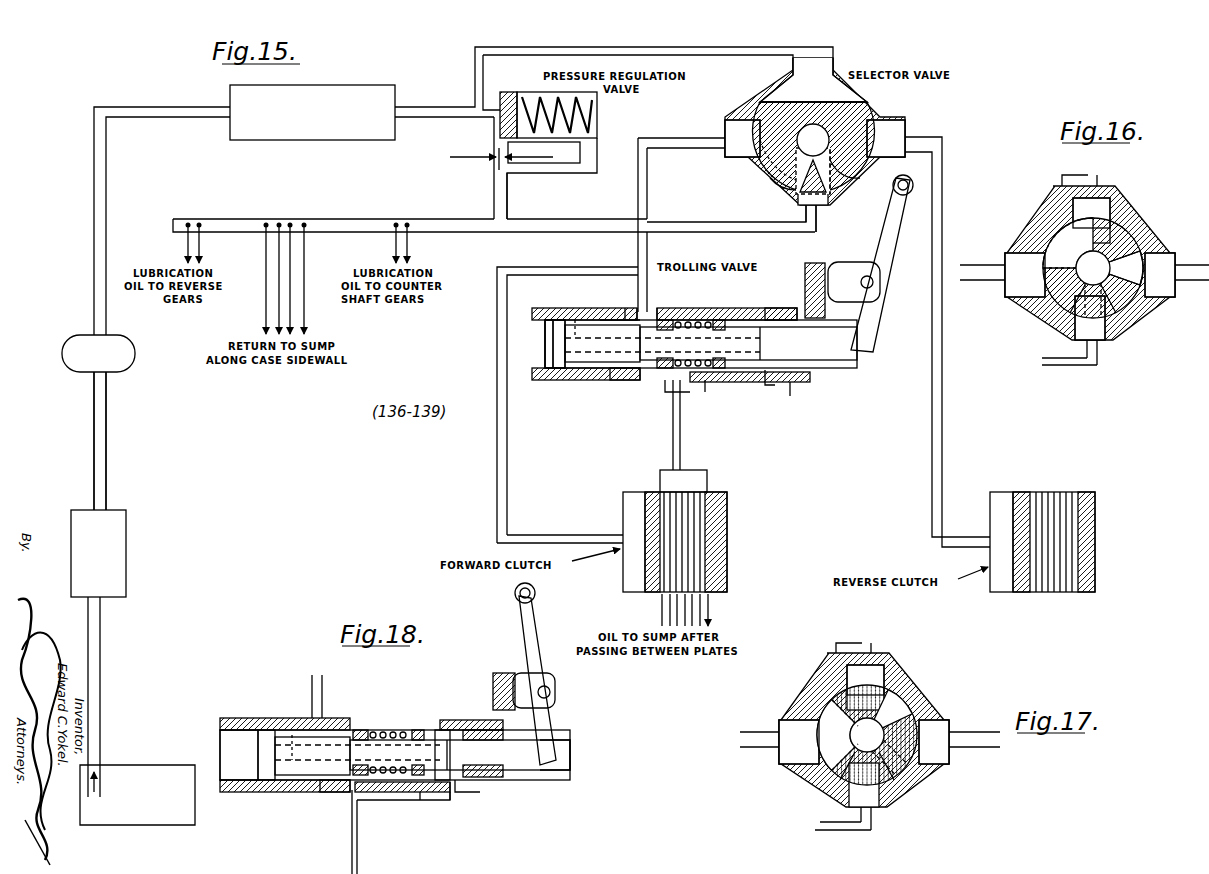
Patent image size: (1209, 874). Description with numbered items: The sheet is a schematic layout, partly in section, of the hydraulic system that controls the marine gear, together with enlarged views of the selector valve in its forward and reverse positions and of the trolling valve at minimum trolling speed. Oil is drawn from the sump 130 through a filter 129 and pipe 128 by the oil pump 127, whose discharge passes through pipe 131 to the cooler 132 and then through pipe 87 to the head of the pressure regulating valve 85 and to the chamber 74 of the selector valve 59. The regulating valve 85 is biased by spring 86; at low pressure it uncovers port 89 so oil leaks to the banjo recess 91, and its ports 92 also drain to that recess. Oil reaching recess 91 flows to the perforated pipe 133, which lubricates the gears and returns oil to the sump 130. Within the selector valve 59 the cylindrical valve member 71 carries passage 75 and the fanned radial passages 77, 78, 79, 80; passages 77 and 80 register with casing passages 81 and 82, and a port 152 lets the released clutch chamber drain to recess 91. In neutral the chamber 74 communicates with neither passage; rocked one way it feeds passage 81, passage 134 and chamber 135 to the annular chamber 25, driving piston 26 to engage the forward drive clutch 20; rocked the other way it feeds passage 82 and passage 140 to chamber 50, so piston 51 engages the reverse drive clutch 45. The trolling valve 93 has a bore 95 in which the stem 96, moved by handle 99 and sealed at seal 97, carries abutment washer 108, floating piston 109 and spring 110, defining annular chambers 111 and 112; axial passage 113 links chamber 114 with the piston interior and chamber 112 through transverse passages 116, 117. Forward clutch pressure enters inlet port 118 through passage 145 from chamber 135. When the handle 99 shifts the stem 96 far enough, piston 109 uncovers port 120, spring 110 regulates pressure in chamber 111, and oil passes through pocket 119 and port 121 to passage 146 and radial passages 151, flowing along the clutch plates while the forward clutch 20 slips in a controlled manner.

In FIG. 15, the forward drive clutch 20 is at (727, 511).
In FIG. 15, the annular chamber 25 is at (623, 506).
In FIG. 15, the annular piston 26 is at (652, 492).
In FIG. 15, the reverse drive clutch 45 is at (1086, 492).
In FIG. 15, the annular chamber 50 is at (1000, 592).
In FIG. 15, the annular piston 51 is at (1022, 492).
In FIG. 15, the selector valve 59 is at (748, 107).
In FIG. 16, the selector valve 59 is at (1048, 213).
In FIG. 17, the selector valve 59 is at (800, 694).
In FIG. 15, the cylindrical valve member 71 is at (860, 113).
In FIG. 16, the cylindrical valve member 71 is at (1120, 230).
In FIG. 17, the cylindrical valve member 71 is at (890, 700).
In FIG. 15, the chamber 74 is at (813, 81).
In FIG. 16, the chamber 74 is at (1091, 213).
In FIG. 17, the chamber 74 is at (865, 680).
In FIG. 15, the passage 75 is at (832, 122).
In FIG. 16, the passage 75 is at (1093, 268).
In FIG. 17, the passage 75 is at (867, 735).
In FIG. 15, the radial passage 77 is at (778, 160).
In FIG. 16, the radial passage 77 is at (1060, 318).
In FIG. 17, the radial passage 77 is at (840, 713).
In FIG. 15, the radial passage 78 is at (792, 188).
In FIG. 16, the radial passage 78 is at (1122, 316).
In FIG. 17, the radial passage 78 is at (839, 755).
In FIG. 15, the radial passage 79 is at (845, 187).
In FIG. 16, the radial passage 79 is at (1103, 292).
In FIG. 17, the radial passage 79 is at (835, 782).
In FIG. 15, the radial passage 80 is at (841, 166).
In FIG. 16, the radial passage 80 is at (1126, 264).
In FIG. 17, the radial passage 80 is at (912, 780).
In FIG. 15, the passage 81 is at (742, 138).
In FIG. 16, the passage 81 is at (1025, 275).
In FIG. 17, the passage 81 is at (799, 742).
In FIG. 15, the passage 82 is at (886, 138).
In FIG. 16, the passage 82 is at (1160, 275).
In FIG. 17, the passage 82 is at (934, 742).
In FIG. 15, the pressure regulating valve 85 is at (508, 92).
In FIG. 15, the spring 86 is at (590, 116).
In FIG. 15, the pipe 87 is at (421, 105).
In FIG. 16, the pipe 87 is at (1104, 182).
In FIG. 17, the pipe 87 is at (875, 648).
In FIG. 15, the port 89 is at (497, 139).
In FIG. 15, the banjo recess 91 is at (494, 196).
In FIG. 15, the ports 92 is at (586, 140).
In FIG. 15, the trolling valve 93 is at (612, 372).
In FIG. 18, the trolling valve 93 is at (272, 698).
In FIG. 15, the bore 95 is at (578, 368).
In FIG. 18, the bore 95 is at (310, 780).
In FIG. 15, the stem 96 is at (549, 372).
In FIG. 18, the stem 96 is at (525, 770).
In FIG. 15, the seal 97 is at (816, 384).
In FIG. 15, the trolling handle 99 is at (876, 307).
In FIG. 18, the trolling handle 99 is at (560, 711).
In FIG. 15, the abutment washer 108 is at (728, 372).
In FIG. 18, the abutment washer 108 is at (442, 730).
In FIG. 15, the floating piston 109 is at (698, 318).
In FIG. 18, the floating piston 109 is at (385, 730).
In FIG. 15, the spring 110 is at (712, 384).
In FIG. 18, the spring 110 is at (424, 800).
In FIG. 15, the annular chamber 111 is at (606, 320).
In FIG. 18, the annular chamber 111 is at (300, 730).
In FIG. 15, the annular chamber 112 is at (815, 305).
In FIG. 18, the annular chamber 112 is at (483, 740).
In FIG. 15, the axial passage 113 is at (574, 318).
In FIG. 18, the axial passage 113 is at (290, 785).
In FIG. 15, the chamber 114 is at (548, 346).
In FIG. 18, the chamber 114 is at (232, 730).
In FIG. 15, the transverse passage 116 is at (775, 322).
In FIG. 18, the transverse passage 116 is at (412, 744).
In FIG. 15, the transverse passage 117 is at (779, 342).
In FIG. 18, the transverse passage 117 is at (468, 750).
In FIG. 15, the inlet port 118 is at (648, 313).
In FIG. 18, the inlet port 118 is at (326, 713).
In FIG. 15, the elongated pocket 119 is at (668, 382).
In FIG. 18, the elongated pocket 119 is at (455, 802).
In FIG. 15, the port 120 is at (647, 384).
In FIG. 18, the port 120 is at (336, 792).
In FIG. 15, the port 121 is at (775, 386).
In FIG. 18, the port 121 is at (462, 792).
In FIG. 15, the oil pump 127 is at (122, 372).
In FIG. 15, the pipe 128 is at (106, 446).
In FIG. 15, the filter 129 is at (126, 573).
In FIG. 15, the sump 130 is at (143, 765).
In FIG. 15, the pipe 131 is at (94, 234).
In FIG. 15, the cooler 132 is at (230, 93).
In FIG. 15, the pipe 133 is at (348, 219).
In FIG. 16, the pipe 133 is at (1066, 365).
In FIG. 17, the pipe 133 is at (815, 826).
In FIG. 15, the passage 134 is at (647, 191).
In FIG. 15, the chamber 135 is at (630, 268).
In FIG. 15, the passage 140 is at (932, 386).
In FIG. 15, the passage 145 is at (628, 309).
In FIG. 15, the passage 146 is at (682, 441).
In FIG. 18, the passage 146 is at (360, 824).
In FIG. 15, the radial passages 151 is at (707, 479).
In FIG. 15, the port 152 is at (818, 212).
In FIG. 16, the port 152 is at (1102, 350).
In FIG. 17, the port 152 is at (890, 815).